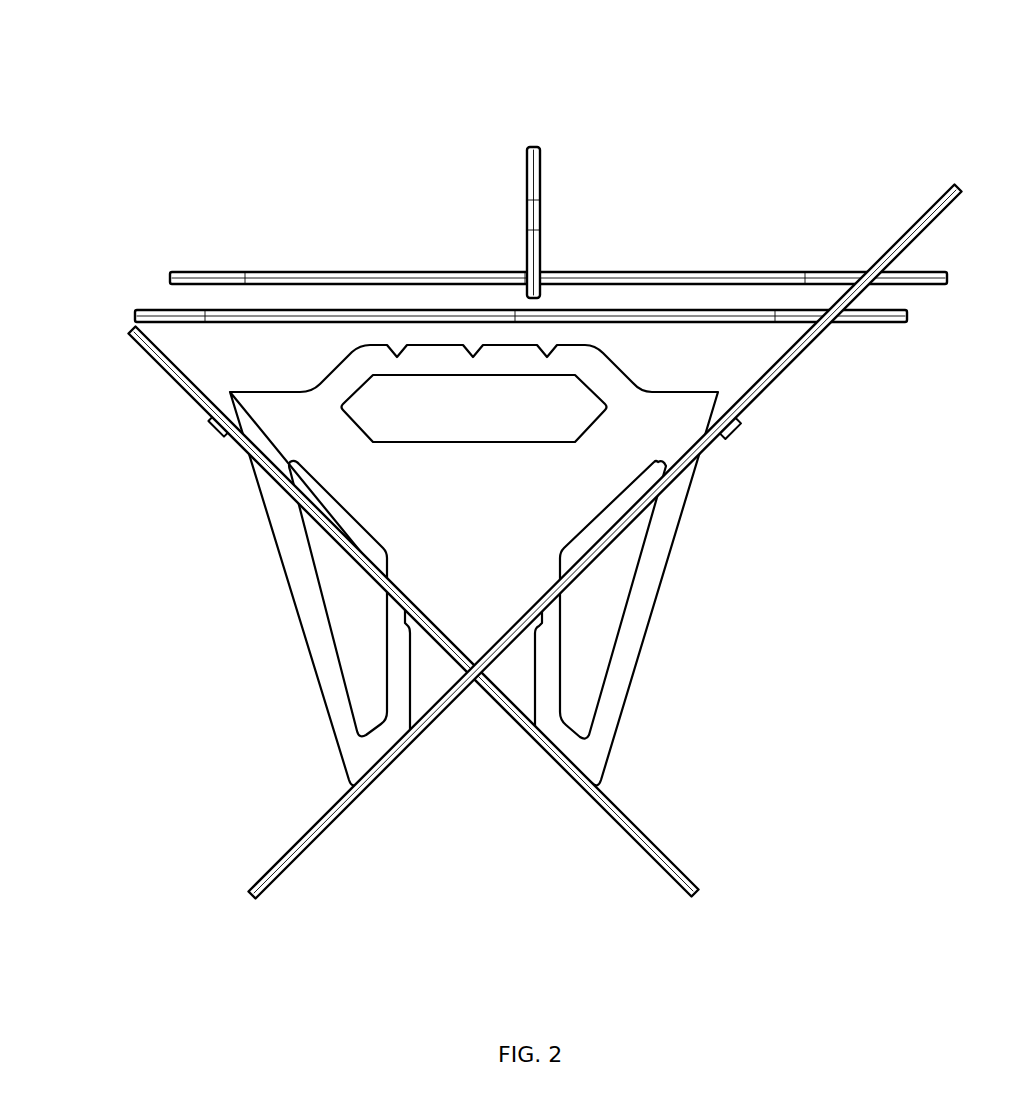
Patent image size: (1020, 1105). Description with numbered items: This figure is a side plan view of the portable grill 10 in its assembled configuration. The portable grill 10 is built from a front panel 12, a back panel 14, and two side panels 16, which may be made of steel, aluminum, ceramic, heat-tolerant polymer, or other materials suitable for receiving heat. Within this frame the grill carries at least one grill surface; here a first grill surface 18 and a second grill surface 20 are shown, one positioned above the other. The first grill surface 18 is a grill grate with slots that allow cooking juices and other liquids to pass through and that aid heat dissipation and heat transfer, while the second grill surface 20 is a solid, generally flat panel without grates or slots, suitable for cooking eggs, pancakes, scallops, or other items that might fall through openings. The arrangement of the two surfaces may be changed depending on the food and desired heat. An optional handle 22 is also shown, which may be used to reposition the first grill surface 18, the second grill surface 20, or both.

The portable grill 10 is at (463, 120).
The front panel 12 is at (210, 378).
The back panel 14 is at (797, 362).
The side panels 16 is at (486, 542).
The first grill surface 18 is at (135, 314).
The second grill surface 20 is at (208, 271).
The handles 22 is at (541, 188).